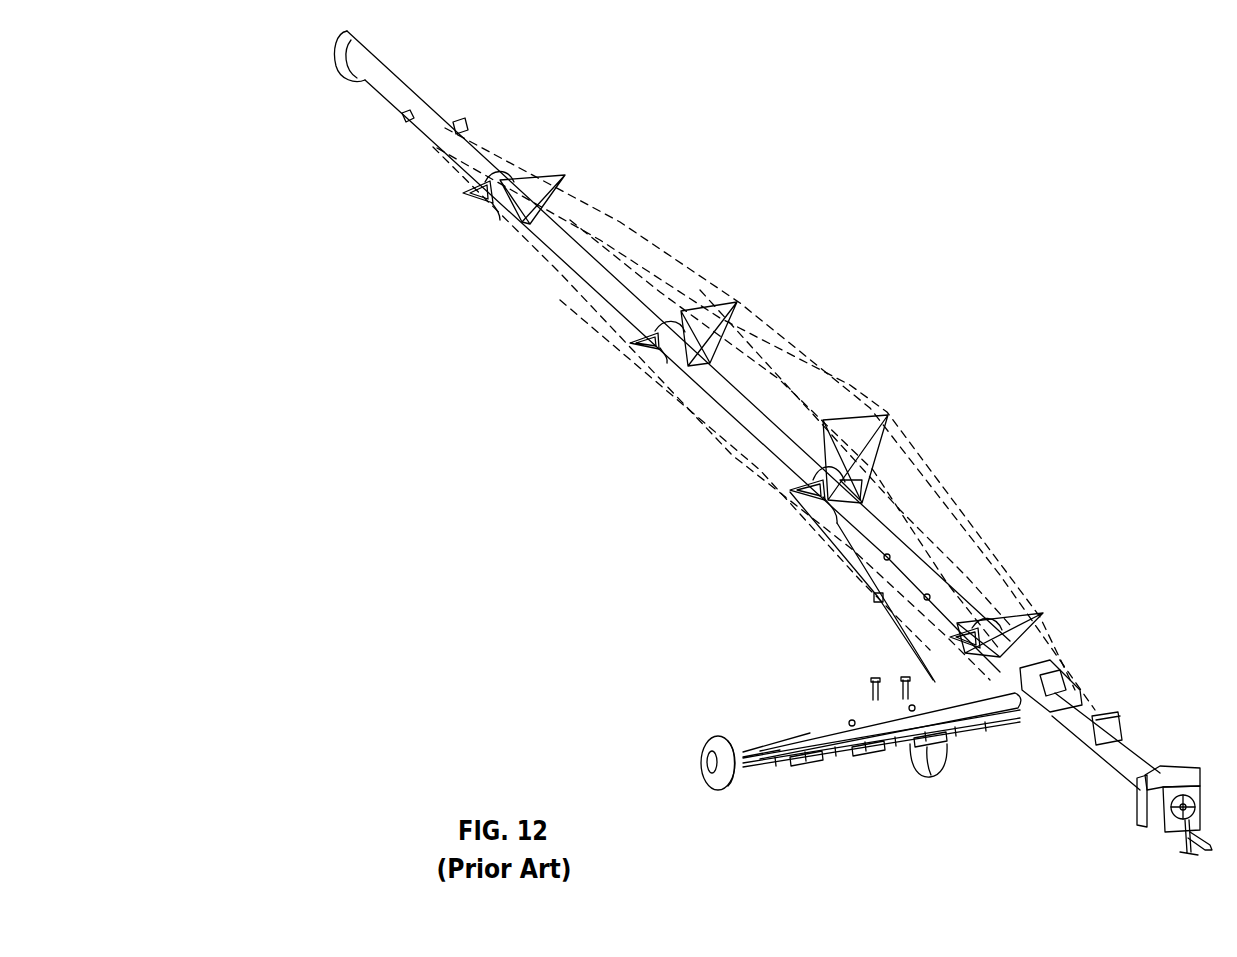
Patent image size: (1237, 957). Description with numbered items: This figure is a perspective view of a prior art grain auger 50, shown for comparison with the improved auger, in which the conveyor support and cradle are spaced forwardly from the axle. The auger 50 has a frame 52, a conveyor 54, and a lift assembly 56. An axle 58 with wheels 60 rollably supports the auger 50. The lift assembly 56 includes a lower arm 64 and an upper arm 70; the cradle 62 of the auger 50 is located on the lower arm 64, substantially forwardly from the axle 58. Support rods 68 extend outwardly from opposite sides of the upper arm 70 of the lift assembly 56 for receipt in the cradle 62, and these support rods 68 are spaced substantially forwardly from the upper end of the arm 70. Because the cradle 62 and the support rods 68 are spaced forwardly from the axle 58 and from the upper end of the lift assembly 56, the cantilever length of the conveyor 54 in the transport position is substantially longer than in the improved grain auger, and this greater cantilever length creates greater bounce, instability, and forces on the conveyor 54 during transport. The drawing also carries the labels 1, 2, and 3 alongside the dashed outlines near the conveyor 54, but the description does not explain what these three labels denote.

The first raised position of auger tube 1 is at (780, 320).
The second raised position of auger tube 2 is at (838, 392).
The third raised position of auger tube 3 is at (732, 457).
The prior art grain auger 50 is at (722, 568).
The frame 52 is at (1000, 724).
The conveyor 54 is at (725, 397).
The lift assembly 56 is at (875, 718).
The axle 58 is at (852, 756).
The wheels 60 is at (702, 752).
The cradle 62 is at (903, 680).
The lower arm 64 is at (800, 733).
The support rods 68 is at (873, 597).
The upper arm 70 is at (856, 562).